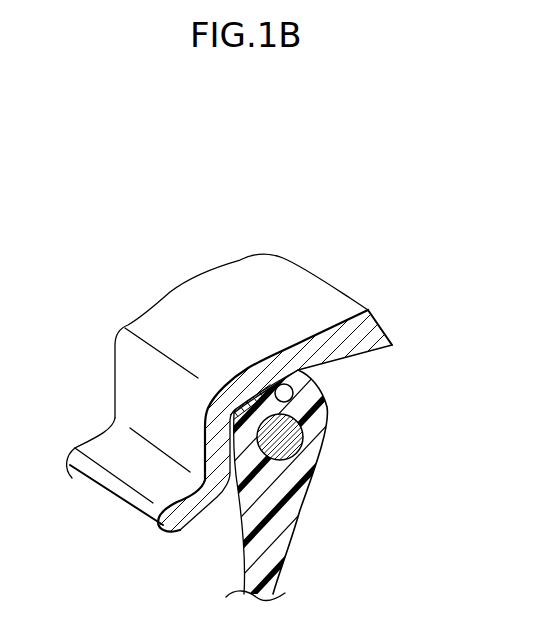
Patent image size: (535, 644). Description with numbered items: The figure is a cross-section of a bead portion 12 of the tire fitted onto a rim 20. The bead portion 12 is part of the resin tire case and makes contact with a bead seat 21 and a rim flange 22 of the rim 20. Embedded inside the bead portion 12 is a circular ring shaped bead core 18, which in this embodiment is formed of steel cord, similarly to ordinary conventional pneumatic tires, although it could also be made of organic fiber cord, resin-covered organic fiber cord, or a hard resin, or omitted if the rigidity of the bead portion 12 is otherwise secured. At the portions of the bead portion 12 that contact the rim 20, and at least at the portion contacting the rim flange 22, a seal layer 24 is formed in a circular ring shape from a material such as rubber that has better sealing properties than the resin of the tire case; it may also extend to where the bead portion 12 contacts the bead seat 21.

The bead portion 12 is at (323, 455).
The bead core 18 is at (305, 432).
The rim 20 is at (248, 231).
The bead seat 21 is at (284, 384).
The rim flange 22 is at (150, 423).
The seal layer 24 is at (228, 412).